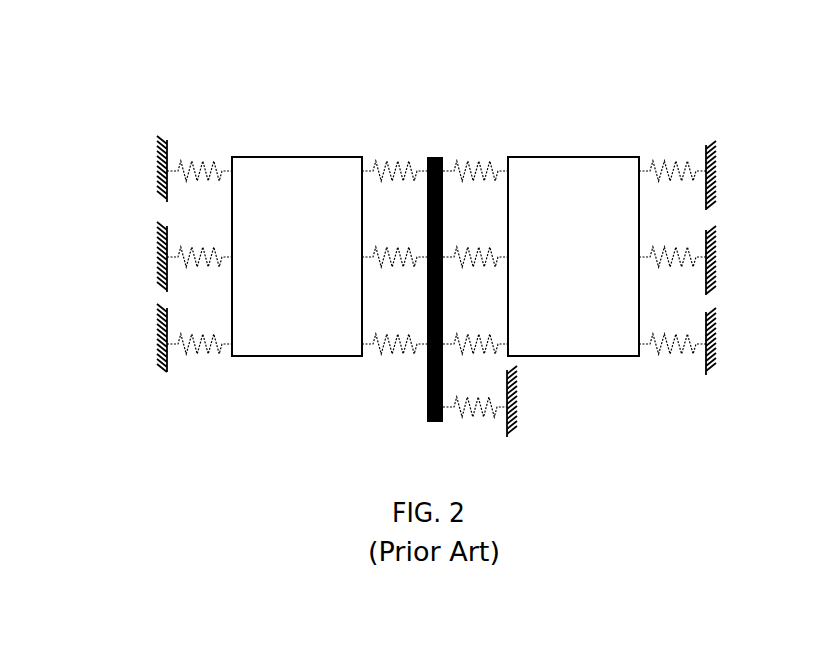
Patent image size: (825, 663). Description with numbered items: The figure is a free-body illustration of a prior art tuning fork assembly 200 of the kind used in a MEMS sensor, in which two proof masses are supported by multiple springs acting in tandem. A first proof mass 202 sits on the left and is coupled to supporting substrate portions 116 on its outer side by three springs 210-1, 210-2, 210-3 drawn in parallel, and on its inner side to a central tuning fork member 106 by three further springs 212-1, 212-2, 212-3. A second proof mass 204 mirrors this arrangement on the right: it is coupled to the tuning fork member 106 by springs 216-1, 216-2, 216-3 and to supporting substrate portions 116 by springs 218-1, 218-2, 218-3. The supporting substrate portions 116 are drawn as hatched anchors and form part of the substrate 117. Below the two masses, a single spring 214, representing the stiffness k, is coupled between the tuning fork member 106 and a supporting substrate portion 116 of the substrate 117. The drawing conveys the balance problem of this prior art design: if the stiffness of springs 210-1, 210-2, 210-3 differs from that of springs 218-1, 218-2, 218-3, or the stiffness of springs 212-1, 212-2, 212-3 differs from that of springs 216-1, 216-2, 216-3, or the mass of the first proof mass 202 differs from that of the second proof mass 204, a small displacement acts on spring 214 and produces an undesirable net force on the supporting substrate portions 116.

The tuning fork assembly 200 is at (611, 97).
The proof mass 202 is at (305, 187).
The proof mass 204 is at (553, 185).
The tuning fork member 106 is at (427, 391).
The supporting substrate portions 116 is at (162, 141).
The substrate 117 is at (714, 337).
The spring 210-1 is at (202, 158).
The spring 210-2 is at (203, 266).
The spring 210-3 is at (204, 346).
The spring 212-1 is at (400, 162).
The spring 212-2 is at (387, 248).
The spring 212-3 is at (391, 352).
The spring 214 is at (473, 412).
The spring 216-1 is at (480, 161).
The spring 216-2 is at (465, 249).
The spring 216-3 is at (474, 336).
The spring 218-1 is at (685, 163).
The spring 218-2 is at (677, 264).
The spring 218-3 is at (668, 349).